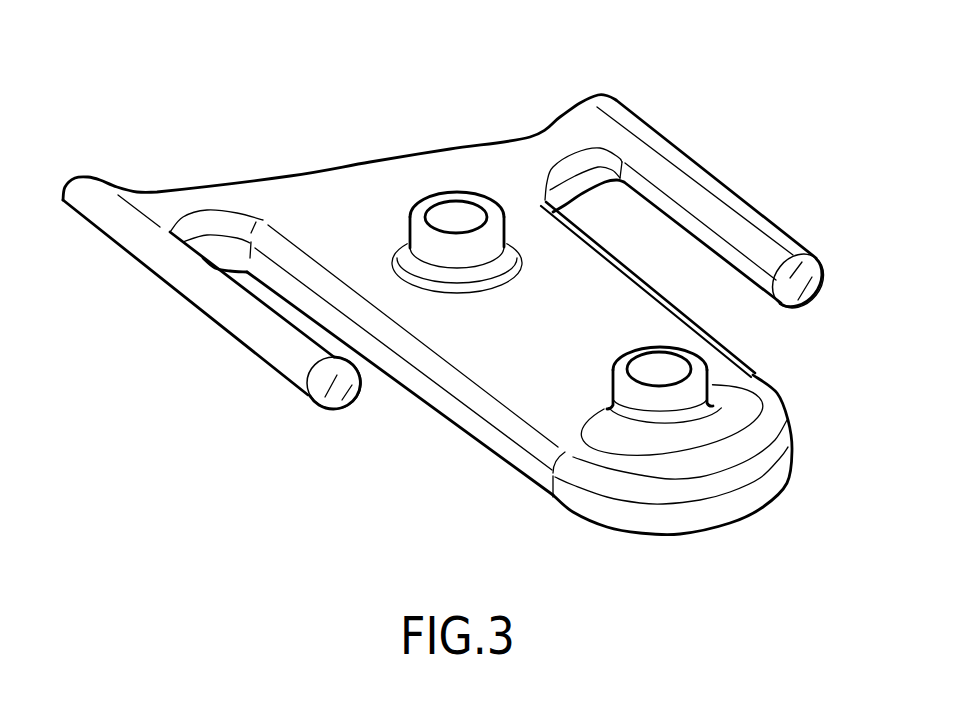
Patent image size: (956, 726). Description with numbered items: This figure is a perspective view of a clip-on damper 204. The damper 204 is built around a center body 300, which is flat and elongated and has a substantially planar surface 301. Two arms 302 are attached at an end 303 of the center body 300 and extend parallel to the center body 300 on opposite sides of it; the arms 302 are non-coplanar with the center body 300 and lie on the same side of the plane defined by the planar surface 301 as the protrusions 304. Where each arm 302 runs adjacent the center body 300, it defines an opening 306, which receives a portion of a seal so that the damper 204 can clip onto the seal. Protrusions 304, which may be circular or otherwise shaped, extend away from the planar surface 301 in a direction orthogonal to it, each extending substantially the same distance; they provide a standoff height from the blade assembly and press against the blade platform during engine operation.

The damper 204 is at (210, 88).
The center body 300 is at (363, 203).
The substantially planar surface 301 is at (525, 395).
The arms 302 is at (247, 336).
The end 303 is at (294, 190).
The protrusions 304 is at (452, 210).
The opening 306 is at (243, 280).